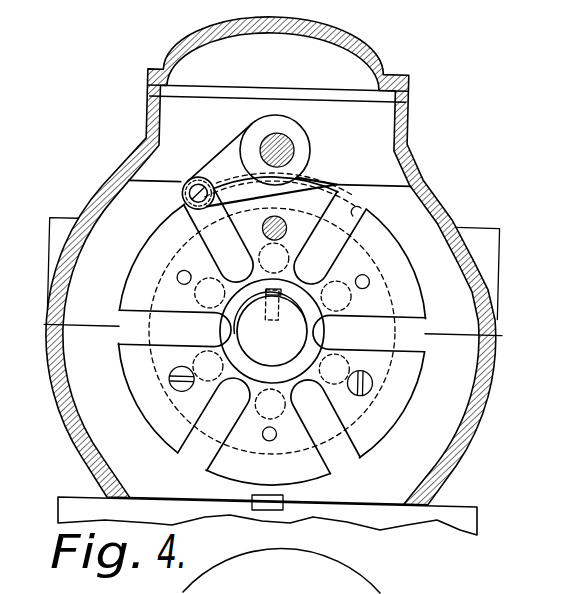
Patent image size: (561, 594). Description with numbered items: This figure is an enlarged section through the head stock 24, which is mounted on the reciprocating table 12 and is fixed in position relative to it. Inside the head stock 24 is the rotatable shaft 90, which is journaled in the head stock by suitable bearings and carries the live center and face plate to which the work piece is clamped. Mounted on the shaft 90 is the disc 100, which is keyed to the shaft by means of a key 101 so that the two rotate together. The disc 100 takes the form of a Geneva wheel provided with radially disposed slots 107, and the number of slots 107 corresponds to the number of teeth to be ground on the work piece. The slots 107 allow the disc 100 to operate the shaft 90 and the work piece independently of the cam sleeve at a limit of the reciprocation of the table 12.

The head stock 24 is at (275, 259).
The table 12 is at (328, 511).
The disc 100 is at (272, 331).
The shaft 90 is at (294, 332).
The key 101 is at (270, 315).
The slots 107 is at (269, 173).